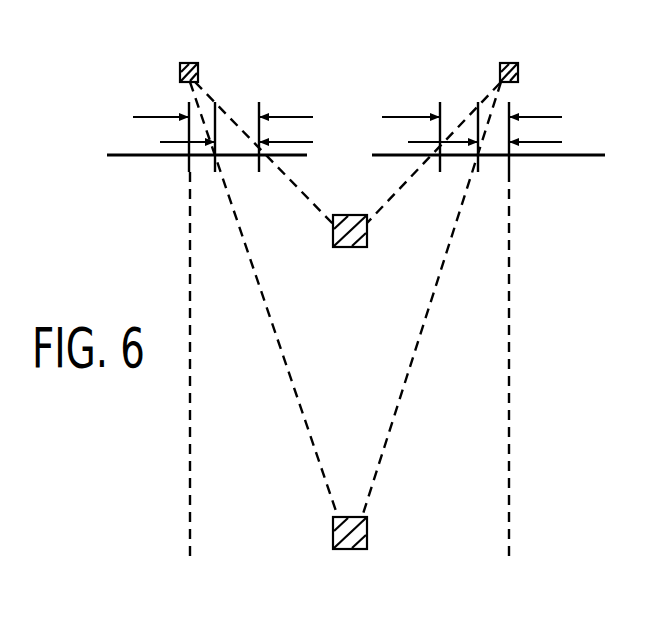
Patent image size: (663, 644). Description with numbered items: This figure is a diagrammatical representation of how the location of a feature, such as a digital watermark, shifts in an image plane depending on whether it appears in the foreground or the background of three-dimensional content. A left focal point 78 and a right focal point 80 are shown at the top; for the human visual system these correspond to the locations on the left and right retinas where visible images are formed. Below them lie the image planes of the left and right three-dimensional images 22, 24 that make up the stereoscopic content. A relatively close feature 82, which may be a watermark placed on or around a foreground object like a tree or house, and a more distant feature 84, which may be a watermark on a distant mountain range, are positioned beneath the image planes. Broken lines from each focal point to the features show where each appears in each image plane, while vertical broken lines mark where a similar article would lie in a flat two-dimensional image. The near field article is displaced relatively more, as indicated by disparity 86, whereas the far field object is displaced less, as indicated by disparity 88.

The left 3D image 22 is at (142, 155).
The right 3D image 24 is at (543, 157).
The left focal point 78 is at (183, 63).
The right focal point 80 is at (502, 63).
The close feature 82 is at (345, 247).
The distant feature 84 is at (347, 550).
The disparity of near field feature 86 is at (362, 115).
The disparity of far field feature 88 is at (376, 142).